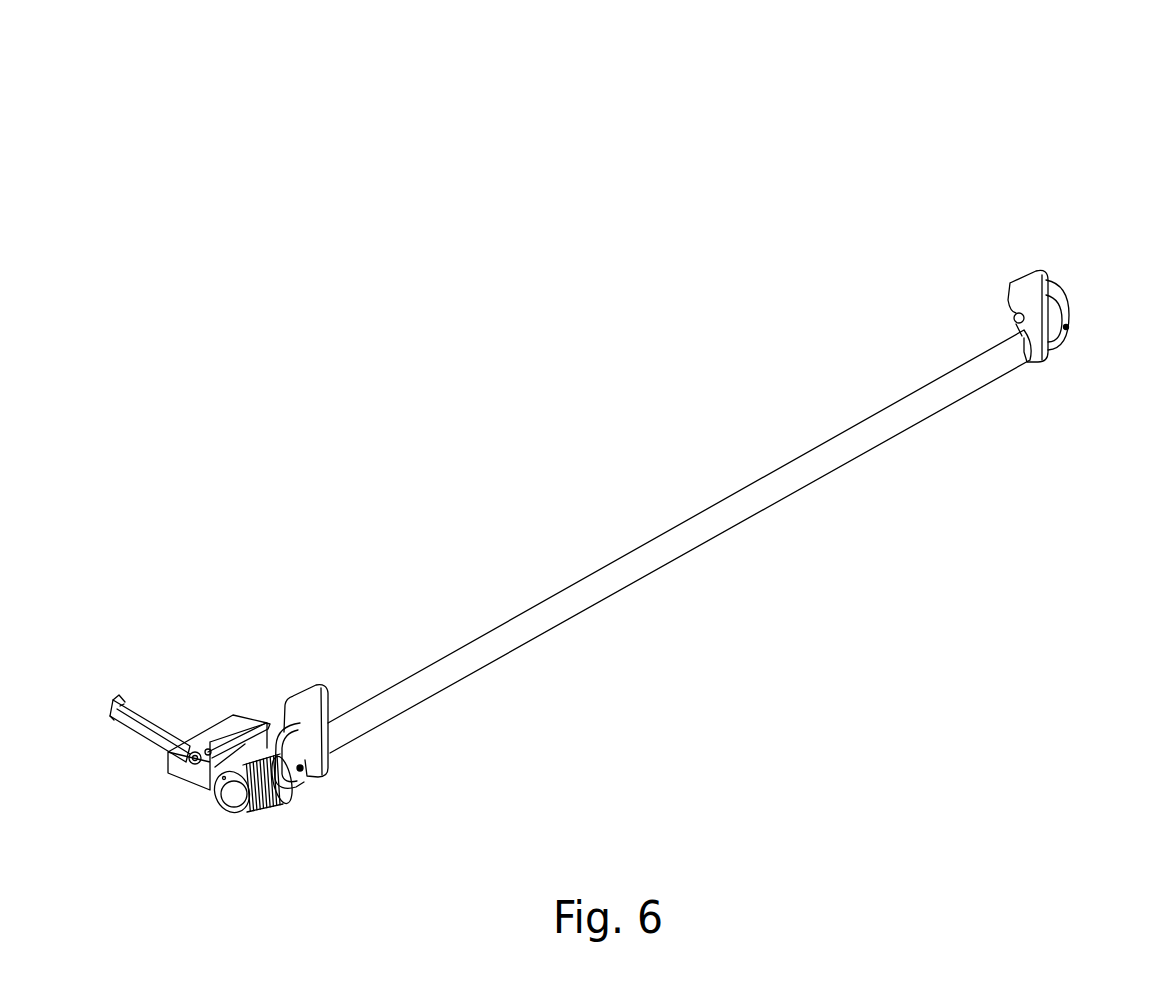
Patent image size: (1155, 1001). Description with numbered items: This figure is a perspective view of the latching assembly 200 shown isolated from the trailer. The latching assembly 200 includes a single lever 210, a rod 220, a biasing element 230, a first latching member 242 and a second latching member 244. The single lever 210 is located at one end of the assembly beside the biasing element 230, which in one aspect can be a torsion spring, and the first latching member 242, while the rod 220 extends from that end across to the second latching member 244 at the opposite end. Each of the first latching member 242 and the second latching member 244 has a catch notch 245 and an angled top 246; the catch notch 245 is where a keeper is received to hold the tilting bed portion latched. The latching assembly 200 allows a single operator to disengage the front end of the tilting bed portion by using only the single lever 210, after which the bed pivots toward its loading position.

The latching assembly 200 is at (1039, 138).
The single lever 210 is at (132, 735).
The rod 220 is at (713, 528).
The biasing element 230 is at (286, 806).
The first latching member 242 is at (313, 688).
The second latching member 244 is at (1025, 272).
The catch notch 245 is at (286, 717).
The angled top 246 is at (314, 690).